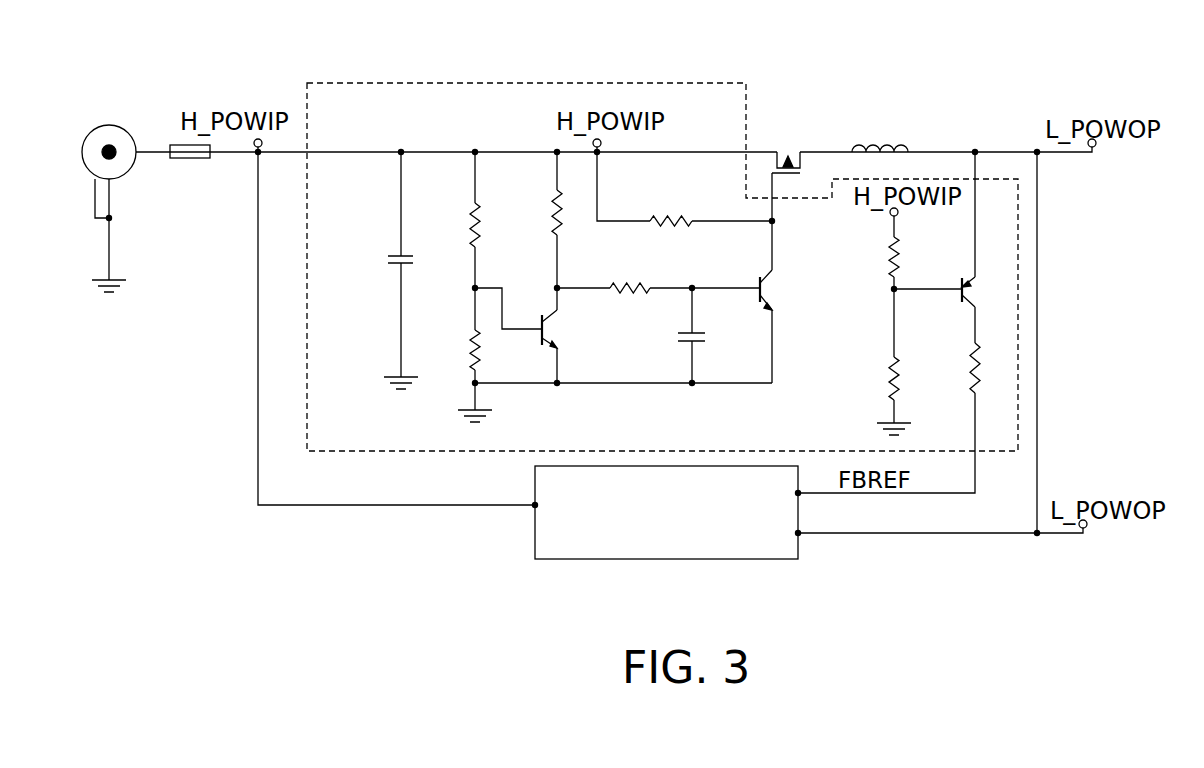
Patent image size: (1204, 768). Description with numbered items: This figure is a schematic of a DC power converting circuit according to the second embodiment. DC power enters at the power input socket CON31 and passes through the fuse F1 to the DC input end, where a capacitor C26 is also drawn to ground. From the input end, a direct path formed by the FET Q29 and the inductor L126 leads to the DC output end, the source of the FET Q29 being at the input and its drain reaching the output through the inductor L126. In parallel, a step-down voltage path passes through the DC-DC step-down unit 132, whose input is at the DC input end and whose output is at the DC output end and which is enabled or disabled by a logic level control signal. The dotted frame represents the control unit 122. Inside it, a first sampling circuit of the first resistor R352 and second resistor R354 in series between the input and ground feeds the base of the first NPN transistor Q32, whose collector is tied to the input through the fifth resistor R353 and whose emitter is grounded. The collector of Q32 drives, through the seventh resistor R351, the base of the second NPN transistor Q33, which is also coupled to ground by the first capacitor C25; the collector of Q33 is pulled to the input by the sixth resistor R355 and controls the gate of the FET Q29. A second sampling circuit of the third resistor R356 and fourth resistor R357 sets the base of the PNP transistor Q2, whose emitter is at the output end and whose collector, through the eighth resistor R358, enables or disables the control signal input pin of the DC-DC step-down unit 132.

The control unit 122 is at (573, 82).
The DC-DC step-down unit 132 is at (657, 559).
The power input socket CON31 is at (122, 194).
The fuse F1 is at (190, 170).
The capacitor C26 is at (365, 270).
The first resistor R352 is at (444, 220).
The fifth resistor R353 is at (525, 231).
The second resistor R354 is at (450, 355).
The sixth resistor R355 is at (684, 189).
The seventh resistor R351 is at (658, 276).
The first capacitor C25 is at (663, 335).
The first NPN transistor Q32 is at (542, 335).
The second NPN transistor Q33 is at (792, 278).
The FET Q29 is at (788, 144).
The inductor L126 is at (894, 135).
The third resistor R356 is at (864, 260).
The fourth resistor R357 is at (869, 362).
The eighth resistor R358 is at (889, 418).
The PNP transistor Q2 is at (953, 247).